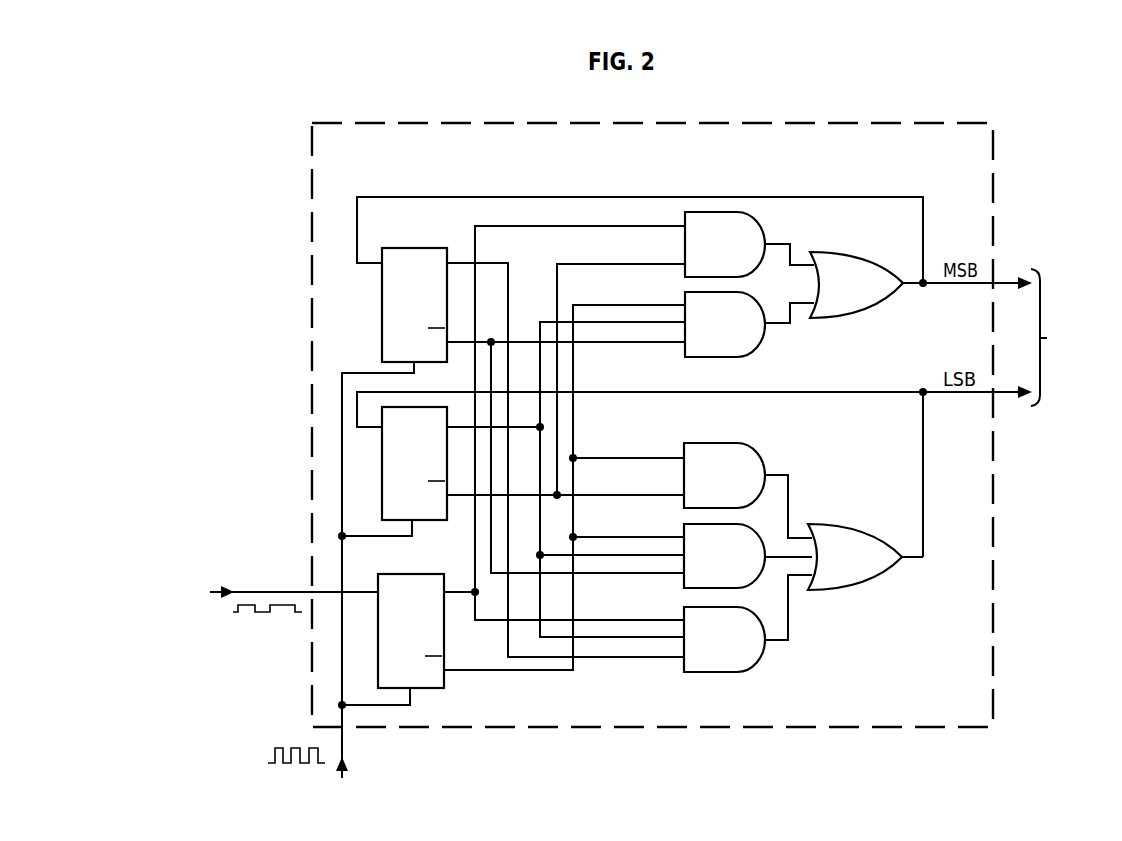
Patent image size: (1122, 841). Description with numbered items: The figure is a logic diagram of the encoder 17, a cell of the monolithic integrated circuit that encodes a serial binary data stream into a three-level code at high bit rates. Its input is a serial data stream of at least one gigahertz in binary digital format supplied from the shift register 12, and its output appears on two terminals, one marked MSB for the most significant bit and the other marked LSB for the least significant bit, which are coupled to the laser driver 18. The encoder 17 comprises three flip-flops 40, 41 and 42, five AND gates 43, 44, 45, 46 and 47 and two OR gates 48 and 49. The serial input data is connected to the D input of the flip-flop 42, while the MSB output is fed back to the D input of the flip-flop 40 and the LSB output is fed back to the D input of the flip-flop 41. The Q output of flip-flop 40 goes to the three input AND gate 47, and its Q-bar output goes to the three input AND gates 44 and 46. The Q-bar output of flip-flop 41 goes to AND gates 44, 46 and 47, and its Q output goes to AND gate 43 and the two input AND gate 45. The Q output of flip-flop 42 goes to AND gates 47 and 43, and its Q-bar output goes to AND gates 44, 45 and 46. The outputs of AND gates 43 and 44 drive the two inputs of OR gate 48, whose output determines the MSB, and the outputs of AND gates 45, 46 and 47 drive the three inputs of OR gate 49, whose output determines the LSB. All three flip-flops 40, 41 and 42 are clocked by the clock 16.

The shift register 12 is at (262, 591).
The clock 16 is at (338, 771).
The encoder 17 is at (710, 158).
The laser driver 18 is at (1070, 337).
The flip-flop 40 is at (424, 309).
The flip-flop 41 is at (424, 473).
The flip-flop 42 is at (421, 633).
The AND gate 43 is at (731, 253).
The three input AND gate 44 is at (731, 332).
The two input AND gate 45 is at (731, 486).
The three input AND gate 46 is at (731, 566).
The three input AND gate 47 is at (731, 649).
The OR gate 48 is at (864, 294).
The OR gate 49 is at (864, 566).